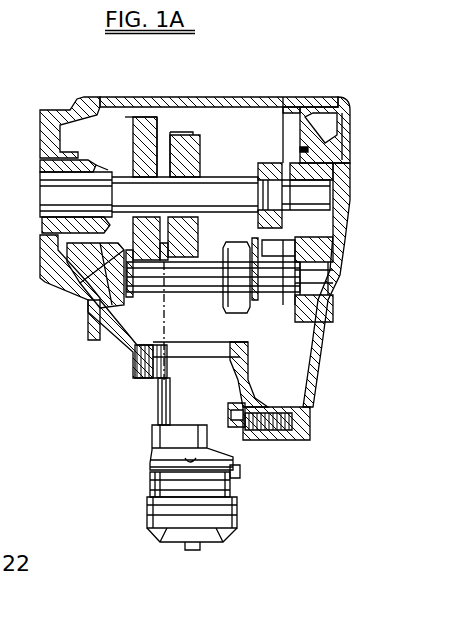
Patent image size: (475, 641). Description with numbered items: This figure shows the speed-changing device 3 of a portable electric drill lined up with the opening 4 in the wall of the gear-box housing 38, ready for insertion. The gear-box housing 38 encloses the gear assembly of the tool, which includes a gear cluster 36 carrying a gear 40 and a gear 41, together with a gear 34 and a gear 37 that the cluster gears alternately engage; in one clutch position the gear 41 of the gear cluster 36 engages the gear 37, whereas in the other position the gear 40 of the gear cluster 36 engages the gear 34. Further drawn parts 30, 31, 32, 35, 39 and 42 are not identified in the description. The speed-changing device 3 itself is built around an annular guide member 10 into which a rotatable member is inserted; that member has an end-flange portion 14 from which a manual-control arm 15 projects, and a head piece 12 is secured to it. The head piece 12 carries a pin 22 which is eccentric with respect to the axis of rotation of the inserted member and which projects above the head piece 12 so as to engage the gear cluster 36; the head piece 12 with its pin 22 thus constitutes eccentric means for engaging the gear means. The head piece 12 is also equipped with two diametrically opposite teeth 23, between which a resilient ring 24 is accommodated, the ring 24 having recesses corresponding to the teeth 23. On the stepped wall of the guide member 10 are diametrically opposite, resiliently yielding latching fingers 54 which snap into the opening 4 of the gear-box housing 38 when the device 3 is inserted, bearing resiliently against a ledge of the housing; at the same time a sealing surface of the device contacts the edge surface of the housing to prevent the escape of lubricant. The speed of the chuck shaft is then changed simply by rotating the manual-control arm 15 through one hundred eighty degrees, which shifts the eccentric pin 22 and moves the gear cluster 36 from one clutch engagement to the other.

The speed-changing device 3 is at (209, 490).
The opening 4 is at (153, 380).
The annular guide member 10 is at (172, 507).
The head piece 12 is at (197, 440).
The end-flange portion 14 is at (236, 537).
The manual-control arm 15 is at (197, 551).
The pin 22 is at (162, 406).
The teeth 23 is at (150, 462).
The resilient ring 24 is at (235, 468).
The housing wall 30 is at (321, 334).
The bearing 31 is at (293, 285).
The washer 32 is at (278, 257).
The gear 34 is at (137, 297).
The main shaft 35 is at (212, 197).
The gear cluster 36 is at (163, 121).
The gear 37 is at (233, 293).
The gear-box housing 38 is at (85, 310).
The lower shaft 39 is at (167, 343).
The gear 40 is at (143, 125).
The gear 41 is at (197, 150).
The top plate 42 is at (205, 99).
The latching fingers 54 is at (150, 480).